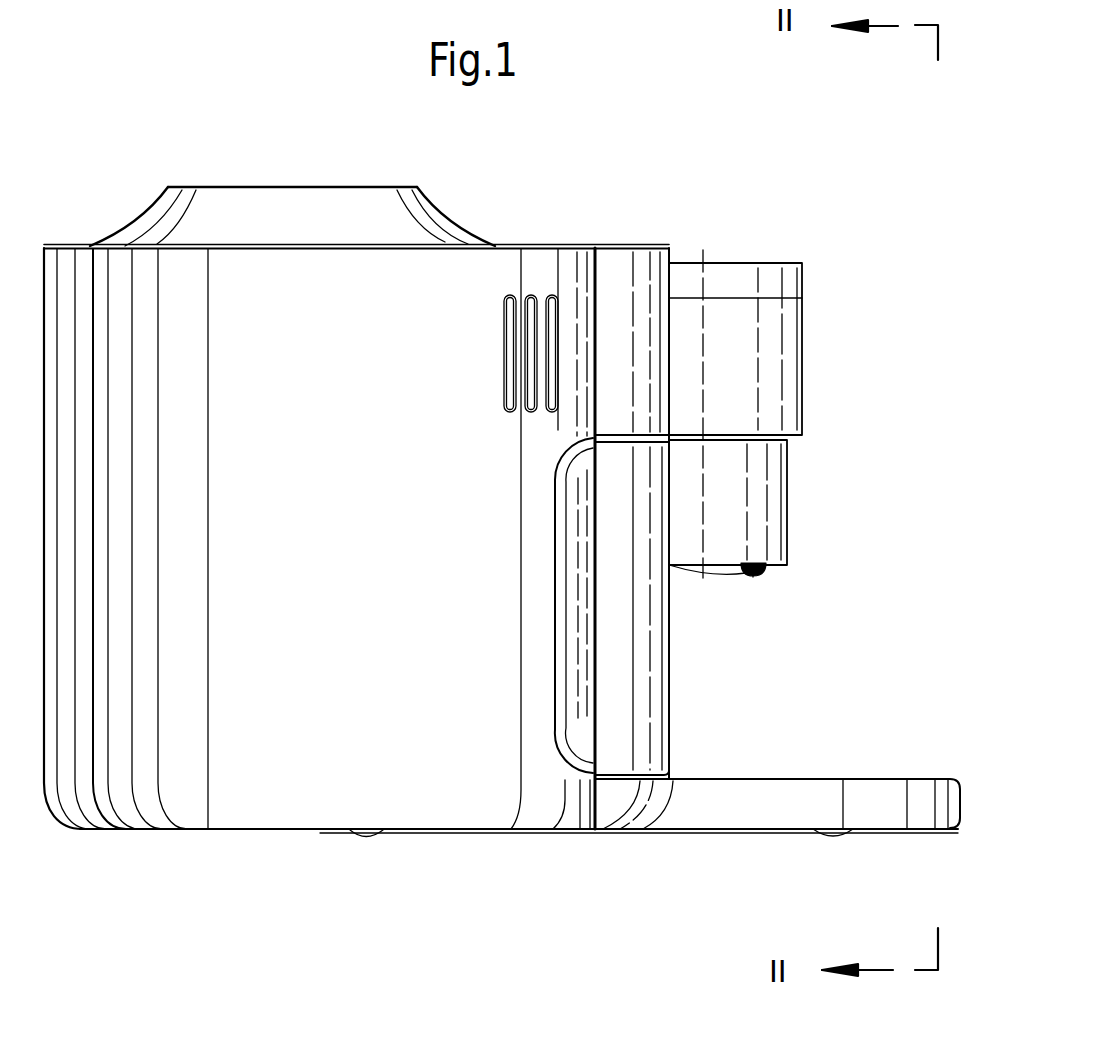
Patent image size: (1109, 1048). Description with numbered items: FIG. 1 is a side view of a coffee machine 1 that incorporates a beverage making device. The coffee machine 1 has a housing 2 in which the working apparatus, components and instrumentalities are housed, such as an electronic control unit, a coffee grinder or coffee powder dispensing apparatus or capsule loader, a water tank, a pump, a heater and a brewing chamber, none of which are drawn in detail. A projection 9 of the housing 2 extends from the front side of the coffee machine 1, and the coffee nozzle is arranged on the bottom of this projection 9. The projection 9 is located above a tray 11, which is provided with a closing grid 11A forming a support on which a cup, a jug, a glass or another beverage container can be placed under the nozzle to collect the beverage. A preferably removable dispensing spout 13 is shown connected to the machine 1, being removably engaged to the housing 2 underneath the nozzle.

The coffee machine 1 is at (497, 202).
The housing 2 is at (642, 279).
The projection 9 is at (782, 360).
The dispensing spout 13 is at (789, 520).
The tray 11 is at (864, 800).
The closing grid 11A is at (773, 779).